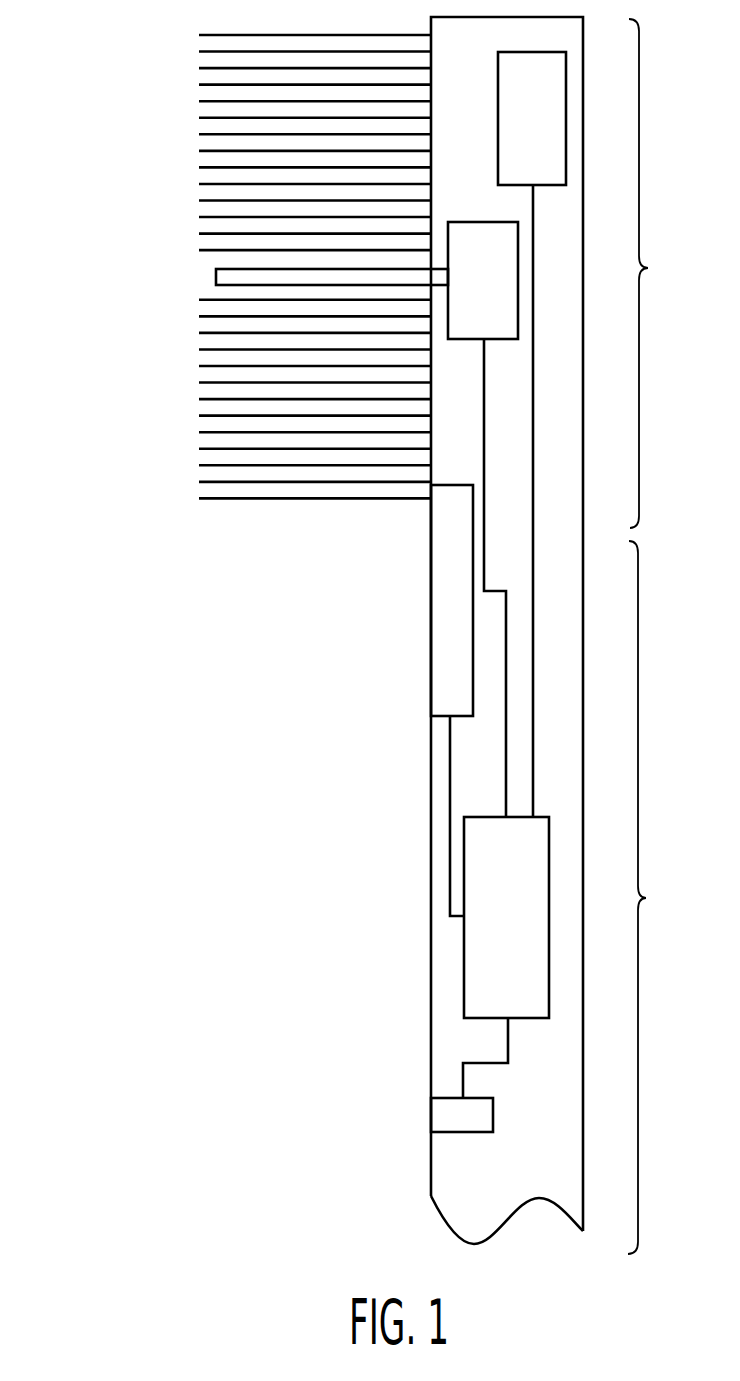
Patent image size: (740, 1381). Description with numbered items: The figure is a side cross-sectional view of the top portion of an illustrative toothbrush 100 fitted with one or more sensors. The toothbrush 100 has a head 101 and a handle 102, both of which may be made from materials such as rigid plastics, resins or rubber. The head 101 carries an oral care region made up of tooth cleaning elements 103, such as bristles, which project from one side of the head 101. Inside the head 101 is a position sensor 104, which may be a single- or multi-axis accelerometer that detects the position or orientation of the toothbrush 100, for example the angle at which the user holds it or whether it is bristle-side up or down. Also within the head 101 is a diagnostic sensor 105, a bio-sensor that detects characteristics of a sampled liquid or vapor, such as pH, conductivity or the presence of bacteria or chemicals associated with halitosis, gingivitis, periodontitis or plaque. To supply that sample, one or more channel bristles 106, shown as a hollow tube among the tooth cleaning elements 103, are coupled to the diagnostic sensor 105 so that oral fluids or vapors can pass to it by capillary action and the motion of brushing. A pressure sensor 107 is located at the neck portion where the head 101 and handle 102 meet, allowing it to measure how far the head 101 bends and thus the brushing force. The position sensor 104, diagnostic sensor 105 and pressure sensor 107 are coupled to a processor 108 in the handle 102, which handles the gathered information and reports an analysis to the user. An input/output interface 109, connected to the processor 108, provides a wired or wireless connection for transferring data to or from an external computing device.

The toothbrush 100 is at (143, 823).
The head 101 is at (691, 284).
The handle 102 is at (690, 913).
The tooth cleaning elements 103 is at (230, 498).
The position sensor 104 is at (550, 133).
The diagnostic sensor 105 is at (501, 295).
The channel bristles 106 is at (215, 277).
The pressure sensor 107 is at (443, 605).
The processor 108 is at (525, 919).
The input/output interface 109 is at (438, 1120).